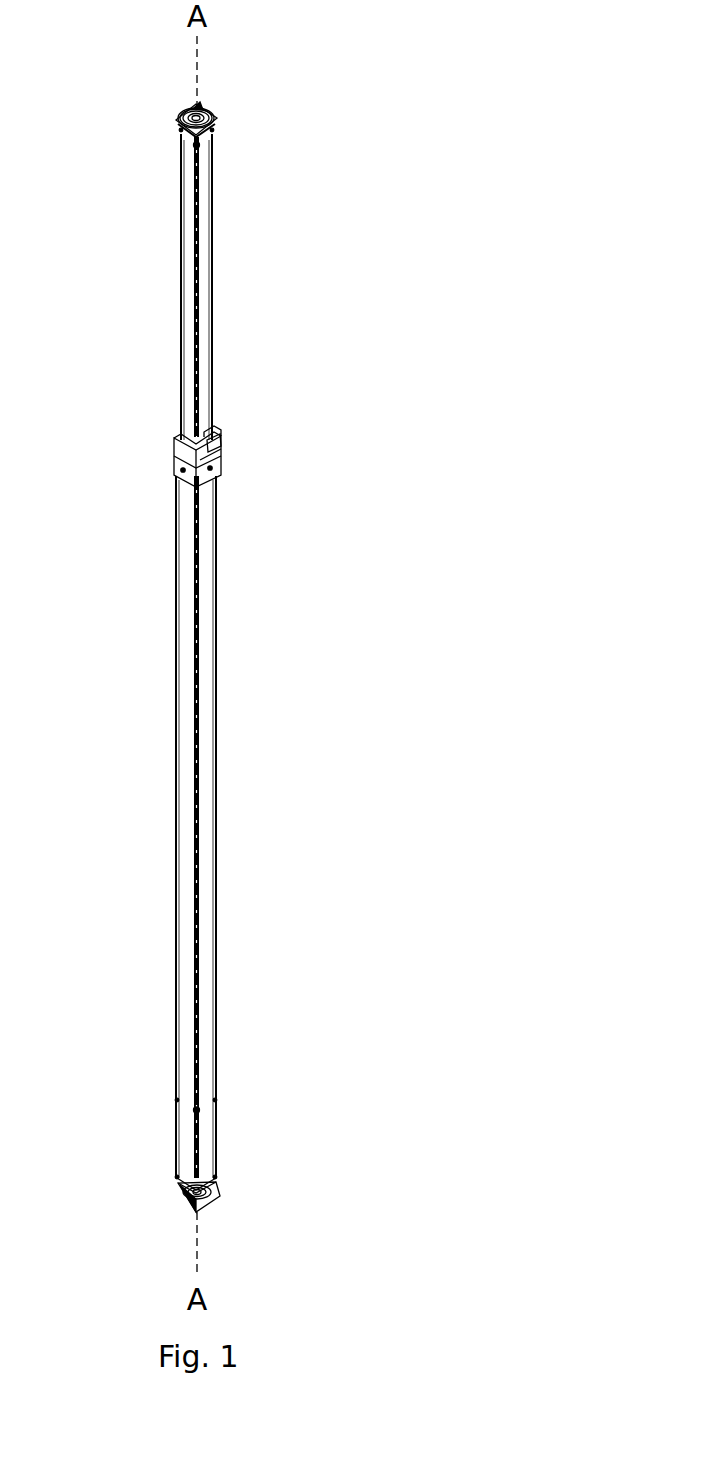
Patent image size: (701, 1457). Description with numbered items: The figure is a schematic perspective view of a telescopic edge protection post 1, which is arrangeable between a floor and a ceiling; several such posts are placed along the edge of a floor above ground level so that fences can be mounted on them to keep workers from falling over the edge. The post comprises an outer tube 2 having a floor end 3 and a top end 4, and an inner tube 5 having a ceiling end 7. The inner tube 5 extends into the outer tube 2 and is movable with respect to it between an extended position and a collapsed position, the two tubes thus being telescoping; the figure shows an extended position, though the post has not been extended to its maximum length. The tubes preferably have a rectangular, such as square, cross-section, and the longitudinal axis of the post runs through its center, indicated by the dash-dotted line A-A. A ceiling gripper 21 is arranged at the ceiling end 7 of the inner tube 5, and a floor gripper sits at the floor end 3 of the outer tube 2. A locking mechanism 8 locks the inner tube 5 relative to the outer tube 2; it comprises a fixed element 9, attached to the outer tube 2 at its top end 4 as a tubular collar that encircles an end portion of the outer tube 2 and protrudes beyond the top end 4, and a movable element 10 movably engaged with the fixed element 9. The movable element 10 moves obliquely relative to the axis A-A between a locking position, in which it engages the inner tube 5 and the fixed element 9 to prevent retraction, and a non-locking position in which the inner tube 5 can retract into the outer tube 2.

The telescopic edge protection post 1 is at (232, 562).
The outer tube 2 is at (216, 760).
The floor end 3 is at (178, 1184).
The top end 4 is at (175, 469).
The inner tube 5 is at (212, 322).
The ceiling end 7 is at (216, 126).
The locking mechanism 8 is at (224, 442).
The fixed element 9 is at (214, 456).
The movable element 10 is at (212, 437).
The ceiling gripper 21 is at (178, 121).